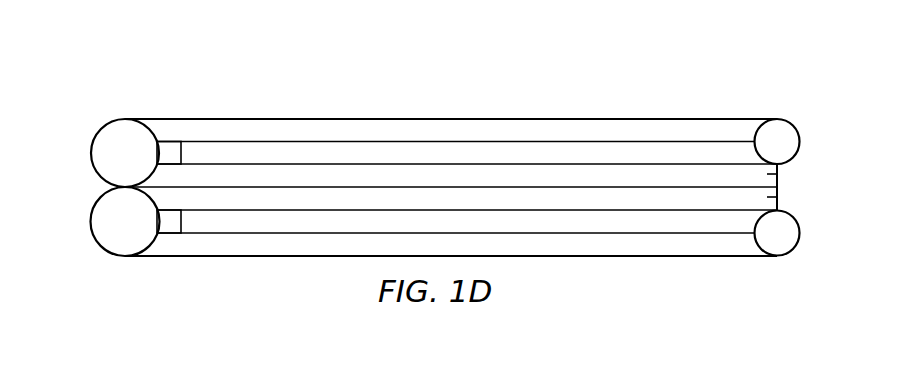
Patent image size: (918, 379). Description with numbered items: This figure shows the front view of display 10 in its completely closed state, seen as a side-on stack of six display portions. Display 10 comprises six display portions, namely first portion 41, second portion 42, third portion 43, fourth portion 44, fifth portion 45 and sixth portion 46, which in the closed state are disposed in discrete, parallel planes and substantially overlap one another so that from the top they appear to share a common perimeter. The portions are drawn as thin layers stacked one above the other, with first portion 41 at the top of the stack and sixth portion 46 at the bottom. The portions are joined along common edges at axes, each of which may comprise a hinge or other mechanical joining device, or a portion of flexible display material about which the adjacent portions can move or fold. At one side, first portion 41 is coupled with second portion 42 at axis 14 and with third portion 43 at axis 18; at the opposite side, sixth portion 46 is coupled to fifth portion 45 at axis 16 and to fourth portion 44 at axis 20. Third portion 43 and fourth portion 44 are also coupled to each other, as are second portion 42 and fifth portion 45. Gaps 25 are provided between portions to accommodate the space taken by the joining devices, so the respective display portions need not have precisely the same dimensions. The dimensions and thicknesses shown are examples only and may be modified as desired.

The display 10 is at (407, 120).
The axis 14 is at (790, 141).
The axis 16 is at (790, 232).
The axis 18 is at (100, 153).
The axis 20 is at (100, 223).
The gaps 25 is at (170, 150).
The first portion 41 is at (303, 130).
The second portion 42 is at (595, 150).
The third portion 43 is at (779, 173).
The fourth portion 44 is at (779, 197).
The fifth portion 45 is at (303, 222).
The sixth portion 46 is at (617, 242).